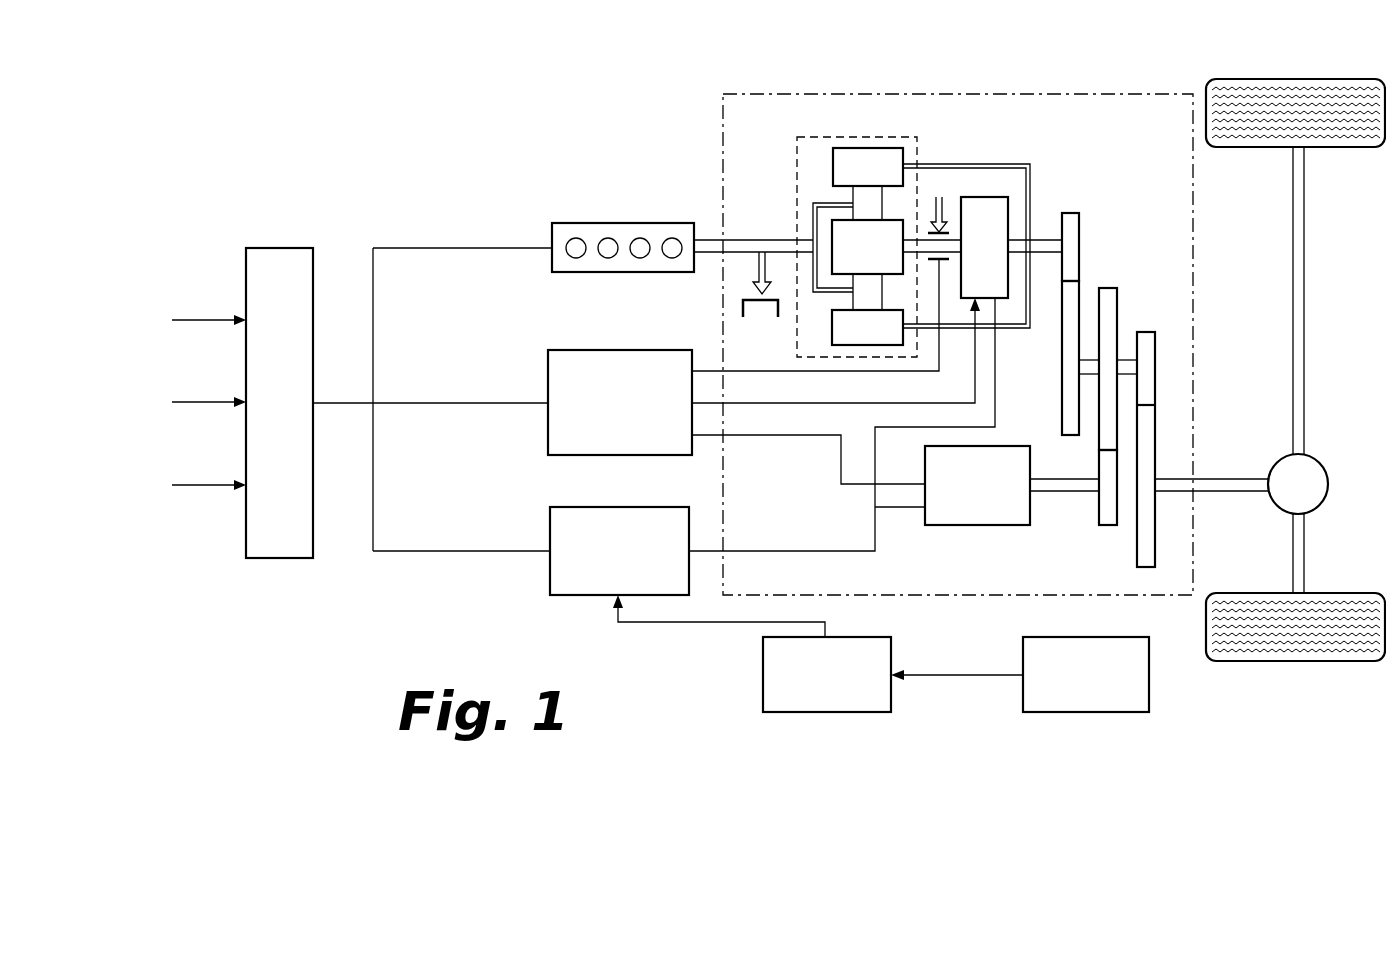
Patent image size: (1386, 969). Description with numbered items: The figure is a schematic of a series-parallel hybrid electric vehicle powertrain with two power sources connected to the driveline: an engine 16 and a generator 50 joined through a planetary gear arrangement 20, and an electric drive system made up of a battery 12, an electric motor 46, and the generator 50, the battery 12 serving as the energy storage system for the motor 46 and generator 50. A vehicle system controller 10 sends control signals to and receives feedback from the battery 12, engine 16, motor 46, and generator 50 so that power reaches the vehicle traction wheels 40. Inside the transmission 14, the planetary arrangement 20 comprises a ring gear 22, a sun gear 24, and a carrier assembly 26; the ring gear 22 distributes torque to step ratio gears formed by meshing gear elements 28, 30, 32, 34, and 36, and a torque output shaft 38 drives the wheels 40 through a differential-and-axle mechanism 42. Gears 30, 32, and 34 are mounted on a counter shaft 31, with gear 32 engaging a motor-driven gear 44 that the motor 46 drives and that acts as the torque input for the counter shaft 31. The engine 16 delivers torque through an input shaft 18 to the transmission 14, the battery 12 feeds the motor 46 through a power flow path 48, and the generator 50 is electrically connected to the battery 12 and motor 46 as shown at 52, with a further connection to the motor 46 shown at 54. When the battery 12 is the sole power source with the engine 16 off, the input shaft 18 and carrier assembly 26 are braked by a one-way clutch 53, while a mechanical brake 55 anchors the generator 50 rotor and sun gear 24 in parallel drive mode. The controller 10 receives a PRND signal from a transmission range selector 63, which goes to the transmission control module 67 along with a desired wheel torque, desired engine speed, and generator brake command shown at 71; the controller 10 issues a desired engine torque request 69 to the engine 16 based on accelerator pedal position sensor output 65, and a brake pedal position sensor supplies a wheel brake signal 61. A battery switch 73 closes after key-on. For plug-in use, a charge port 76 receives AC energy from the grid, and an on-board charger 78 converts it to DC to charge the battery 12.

The vehicle system controller 10 is at (282, 248).
The battery 12 is at (620, 507).
The transmission 14 is at (924, 595).
The engine 16 is at (575, 223).
The input shaft 18 is at (706, 240).
The planetary gear arrangement 20 is at (926, 158).
The ring gear 22 is at (833, 165).
The sun gear 24 is at (832, 245).
The carrier assembly 26 is at (813, 205).
The gear element 28 is at (1080, 228).
The gear 30 is at (1062, 400).
The counter shaft 31 is at (1126, 360).
The gear 32 is at (1108, 288).
The gear 34 is at (1146, 332).
The gear element 36 is at (1134, 439).
The torque output shaft 38 is at (1215, 479).
The vehicle traction wheels 40 is at (1298, 79).
The differential-and-axle mechanism 42 is at (1328, 484).
The motor-driven gear 44 is at (1108, 525).
The electric motor 46 is at (970, 525).
The power flow path 48 is at (783, 551).
The generator 50 is at (1008, 222).
The electrical connection of generator 52 is at (885, 427).
The one-way clutch 53 is at (756, 272).
The motor control line 54 is at (890, 507).
The mechanical brake 55 is at (935, 215).
The wheel brake signal 61 is at (205, 487).
The transmission range selector 63 is at (205, 322).
The accelerator pedal position sensor output 65 is at (205, 404).
The transmission control module 67 is at (635, 350).
The desired engine torque request 69 is at (445, 249).
The TCM command signals 71 is at (445, 404).
The battery switch 73 is at (445, 552).
The charge port 76 is at (1090, 712).
The on-board charger 78 is at (826, 712).